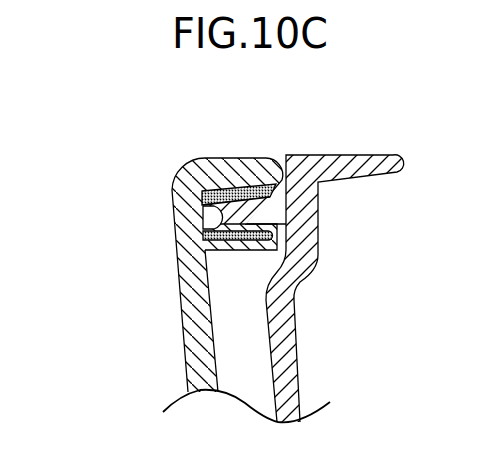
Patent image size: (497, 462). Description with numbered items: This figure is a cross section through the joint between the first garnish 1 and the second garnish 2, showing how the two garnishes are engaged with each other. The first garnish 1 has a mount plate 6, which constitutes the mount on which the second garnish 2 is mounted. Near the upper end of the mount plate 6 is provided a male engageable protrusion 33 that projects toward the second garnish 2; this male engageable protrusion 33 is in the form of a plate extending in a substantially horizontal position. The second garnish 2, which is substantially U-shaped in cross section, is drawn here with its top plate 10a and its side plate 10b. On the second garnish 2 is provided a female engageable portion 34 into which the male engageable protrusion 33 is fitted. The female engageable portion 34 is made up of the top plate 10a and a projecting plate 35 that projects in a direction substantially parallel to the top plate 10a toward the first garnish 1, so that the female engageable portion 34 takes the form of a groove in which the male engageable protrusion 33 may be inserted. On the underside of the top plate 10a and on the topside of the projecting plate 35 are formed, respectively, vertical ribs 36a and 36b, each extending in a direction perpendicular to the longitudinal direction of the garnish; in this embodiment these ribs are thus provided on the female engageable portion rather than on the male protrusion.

The first garnish 1 is at (338, 137).
The second garnish 2 is at (192, 238).
The mount plate 6 is at (290, 336).
The top plate 10a is at (213, 175).
The side plate 10b is at (190, 345).
The male engageable protrusion 33 is at (222, 222).
The female engageable portion 34 is at (196, 215).
The projecting plate 35 is at (237, 252).
The vertical rib 36a is at (260, 190).
The vertical rib 36b is at (200, 235).